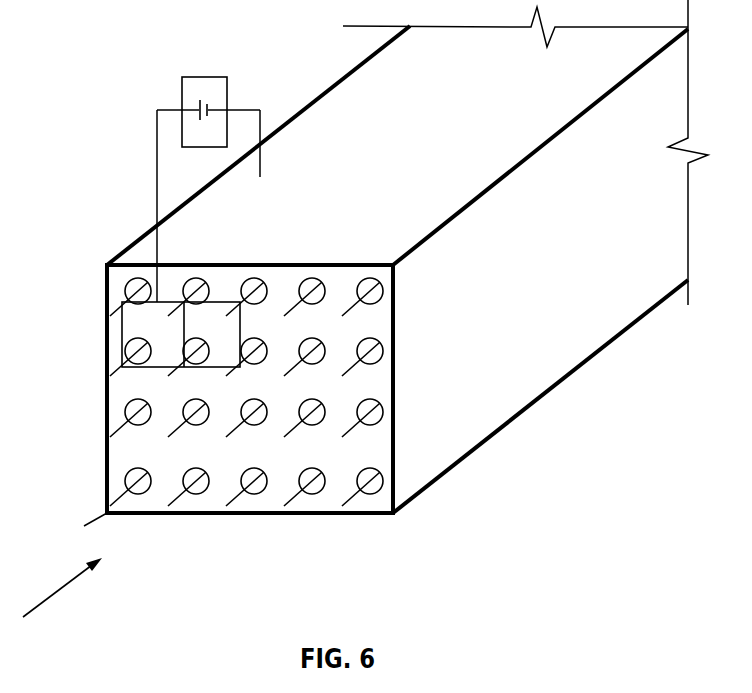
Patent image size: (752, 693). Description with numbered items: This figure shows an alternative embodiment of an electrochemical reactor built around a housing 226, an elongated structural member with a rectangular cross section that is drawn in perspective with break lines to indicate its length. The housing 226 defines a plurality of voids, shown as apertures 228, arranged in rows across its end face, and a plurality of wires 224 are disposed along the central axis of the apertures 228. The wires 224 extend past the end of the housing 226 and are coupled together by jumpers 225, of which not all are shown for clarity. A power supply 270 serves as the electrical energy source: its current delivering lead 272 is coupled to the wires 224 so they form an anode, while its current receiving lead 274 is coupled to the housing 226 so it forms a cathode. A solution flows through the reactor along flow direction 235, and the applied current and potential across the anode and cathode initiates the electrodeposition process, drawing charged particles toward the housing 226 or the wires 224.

The wires 224 is at (95, 513).
The jumpers 225 is at (122, 333).
The housing 226 is at (377, 322).
The apertures 228 is at (128, 290).
The flow direction 235 is at (70, 587).
The power supply 270 is at (207, 76).
The current delivering lead 272 is at (157, 177).
The current receiving lead 274 is at (242, 110).